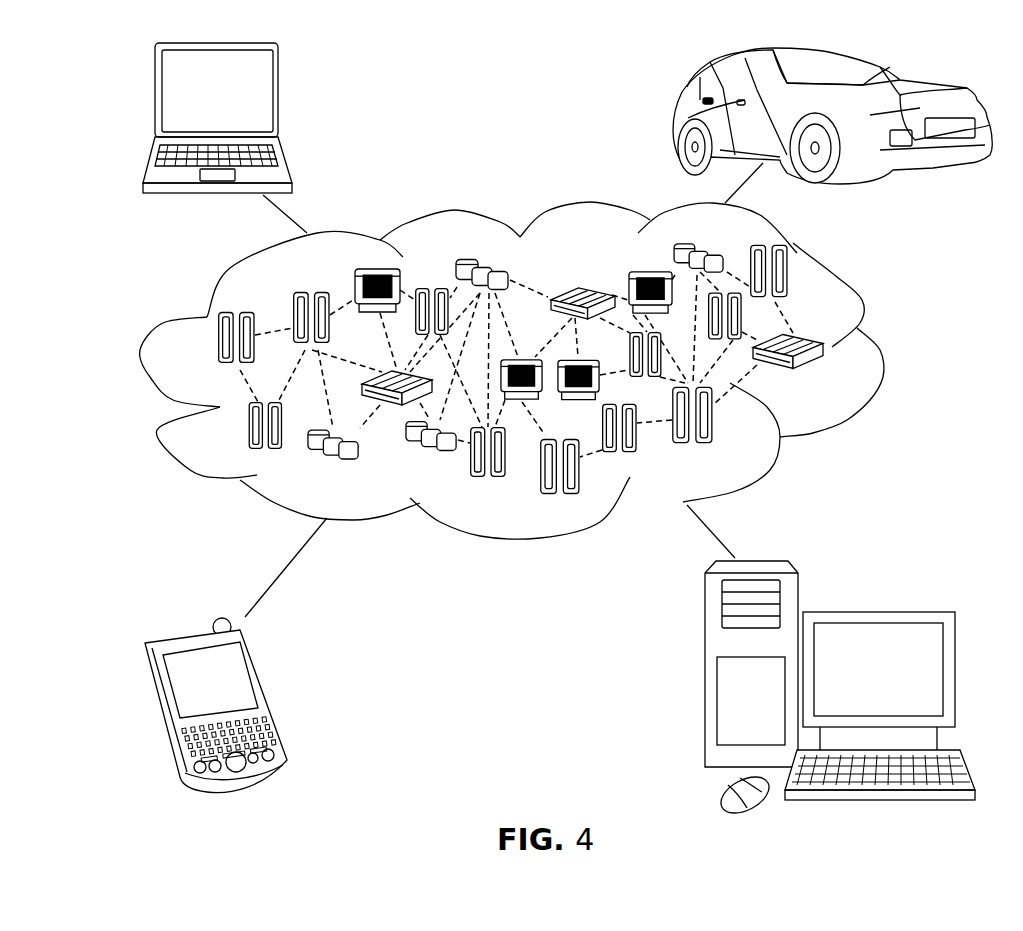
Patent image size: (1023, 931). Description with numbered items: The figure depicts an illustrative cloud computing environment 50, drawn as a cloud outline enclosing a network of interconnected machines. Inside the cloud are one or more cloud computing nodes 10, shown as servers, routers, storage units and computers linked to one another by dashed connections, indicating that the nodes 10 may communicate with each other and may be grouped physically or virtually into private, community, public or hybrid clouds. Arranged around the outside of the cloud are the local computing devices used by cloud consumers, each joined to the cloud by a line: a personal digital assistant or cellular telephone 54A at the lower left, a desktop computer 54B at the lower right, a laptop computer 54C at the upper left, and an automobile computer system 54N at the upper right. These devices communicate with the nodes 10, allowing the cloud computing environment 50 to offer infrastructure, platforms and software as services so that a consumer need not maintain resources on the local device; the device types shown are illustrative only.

The cloud computing nodes 10 is at (835, 379).
The cloud computing environment 50 is at (880, 350).
The personal digital assistant (PDA) or cellular telephone 54A is at (270, 692).
The desktop computer 54B is at (877, 612).
The laptop computer 54C is at (282, 100).
The automobile computer system 54N is at (682, 113).